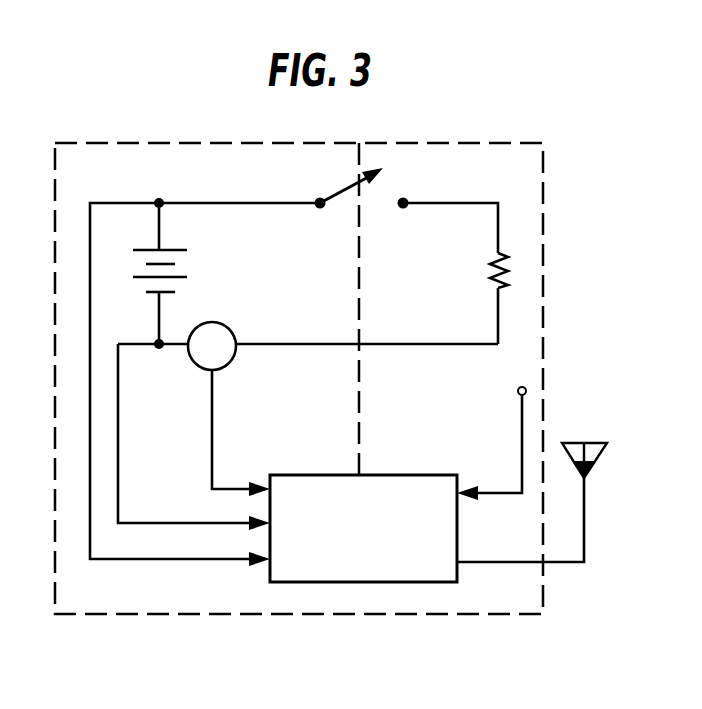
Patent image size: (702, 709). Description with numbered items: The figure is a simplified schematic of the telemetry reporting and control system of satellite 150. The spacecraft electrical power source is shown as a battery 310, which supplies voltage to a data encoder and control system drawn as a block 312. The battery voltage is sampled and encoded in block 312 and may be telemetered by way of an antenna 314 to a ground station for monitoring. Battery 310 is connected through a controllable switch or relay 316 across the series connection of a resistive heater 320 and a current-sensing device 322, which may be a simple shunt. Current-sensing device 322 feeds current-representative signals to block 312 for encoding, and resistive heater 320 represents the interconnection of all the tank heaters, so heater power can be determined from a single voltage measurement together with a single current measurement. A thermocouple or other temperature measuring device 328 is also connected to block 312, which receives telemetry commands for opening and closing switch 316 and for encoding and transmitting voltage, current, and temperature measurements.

The satellite 150 is at (545, 200).
The battery 310 is at (170, 242).
The data encoder and control block 312 is at (330, 475).
The antenna 314 is at (590, 458).
The controllable switch or relay 316 is at (333, 191).
The resistive heater 320 is at (494, 253).
The current-sensing device 322 is at (222, 323).
The thermocouple or other temperature measuring device 328 is at (525, 384).